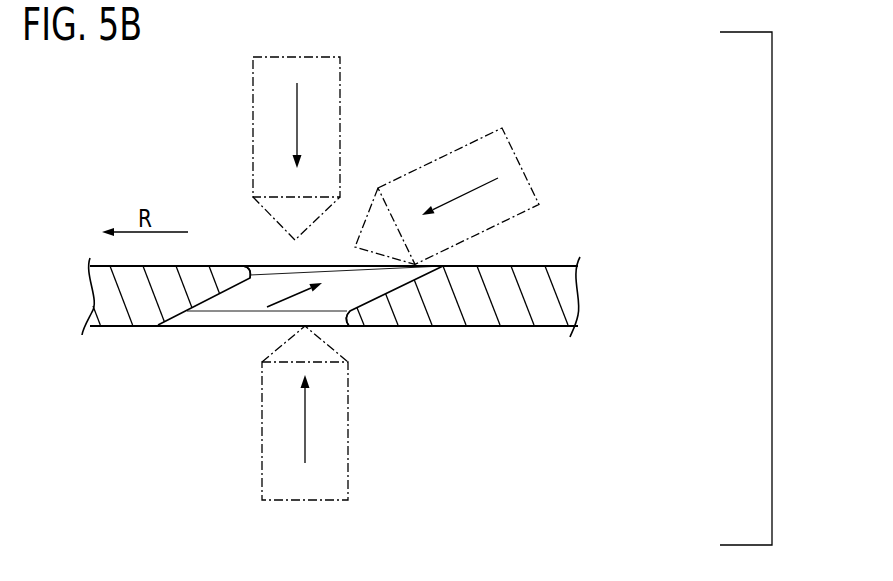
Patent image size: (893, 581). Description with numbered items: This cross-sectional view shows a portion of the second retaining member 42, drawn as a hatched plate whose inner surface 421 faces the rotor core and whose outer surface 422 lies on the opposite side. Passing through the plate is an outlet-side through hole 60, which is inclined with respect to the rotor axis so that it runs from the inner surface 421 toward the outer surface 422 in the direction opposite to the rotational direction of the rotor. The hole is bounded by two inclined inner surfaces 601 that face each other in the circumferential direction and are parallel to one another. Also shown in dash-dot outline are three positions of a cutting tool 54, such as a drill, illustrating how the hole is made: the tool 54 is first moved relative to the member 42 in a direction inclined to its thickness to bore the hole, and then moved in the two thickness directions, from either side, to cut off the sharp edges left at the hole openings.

The second retaining member 42 is at (528, 262).
The inner surface 421 is at (482, 327).
The outer surface 422 is at (188, 265).
The cutting tool 54 is at (253, 103).
The outlet-side through hole 60 is at (243, 318).
The inclined inner surface 601 is at (354, 311).